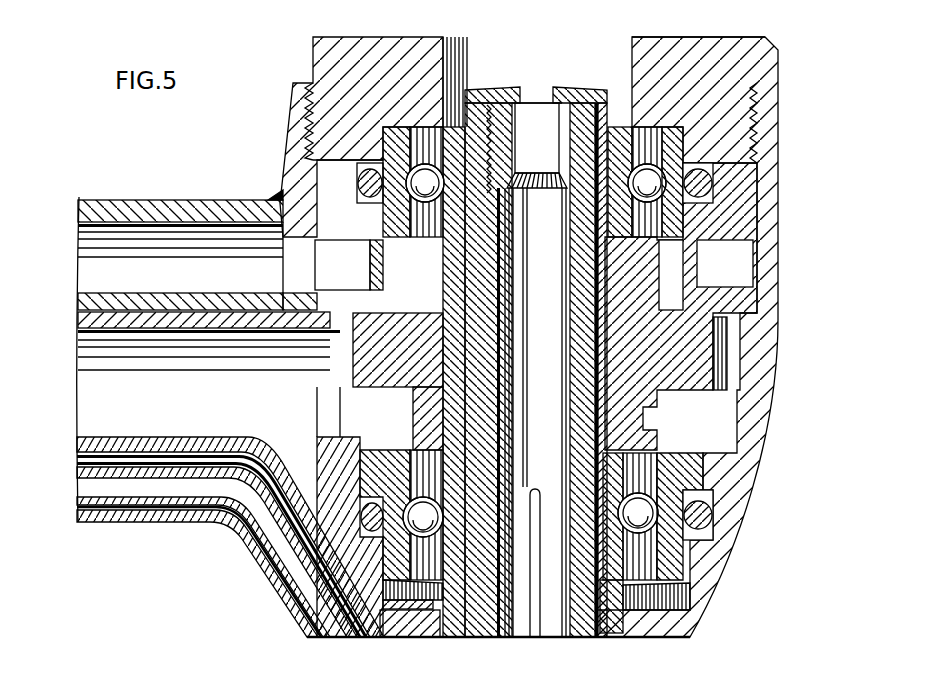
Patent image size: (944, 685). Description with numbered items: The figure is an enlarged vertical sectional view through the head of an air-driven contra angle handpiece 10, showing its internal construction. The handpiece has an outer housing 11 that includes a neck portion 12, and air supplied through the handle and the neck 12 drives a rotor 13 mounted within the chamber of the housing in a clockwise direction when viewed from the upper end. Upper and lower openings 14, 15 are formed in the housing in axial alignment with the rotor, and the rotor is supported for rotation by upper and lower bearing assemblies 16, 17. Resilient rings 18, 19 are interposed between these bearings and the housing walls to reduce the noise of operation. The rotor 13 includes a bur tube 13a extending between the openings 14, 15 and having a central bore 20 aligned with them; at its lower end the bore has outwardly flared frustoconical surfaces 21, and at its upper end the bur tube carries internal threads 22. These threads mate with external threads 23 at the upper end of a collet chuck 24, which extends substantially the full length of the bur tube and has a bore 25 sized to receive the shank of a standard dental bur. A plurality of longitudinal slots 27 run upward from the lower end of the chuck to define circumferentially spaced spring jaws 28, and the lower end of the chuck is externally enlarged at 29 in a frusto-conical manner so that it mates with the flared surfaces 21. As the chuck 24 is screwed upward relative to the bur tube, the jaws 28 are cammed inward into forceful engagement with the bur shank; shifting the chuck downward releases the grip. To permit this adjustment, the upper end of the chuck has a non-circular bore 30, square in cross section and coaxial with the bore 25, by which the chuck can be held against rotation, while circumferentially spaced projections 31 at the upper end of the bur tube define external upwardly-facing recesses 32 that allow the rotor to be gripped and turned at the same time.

The handpiece 10 is at (161, 521).
The outer housing 11 is at (782, 140).
The neck portion 12 is at (204, 200).
The rotor 13 is at (728, 350).
The bur tube 13a is at (607, 358).
The upper opening 14 is at (625, 62).
The lower opening 15 is at (614, 634).
The upper bearing assembly 16 is at (404, 127).
The lower bearing assembly 17 is at (397, 446).
The resilient ring 18 is at (362, 205).
The resilient ring 19 is at (712, 512).
The central bore 20 is at (598, 405).
The outwardly flared frustoconical surfaces 21 is at (593, 628).
The internal threads 22 is at (549, 186).
The external threads 23 is at (503, 195).
The collet chuck 24 is at (577, 377).
The bore 25 is at (567, 293).
The longitudinal slots 27 is at (533, 487).
The spring jaws 28 is at (547, 613).
The externally enlarged lower end 29 is at (447, 638).
The non-circular bore 30 is at (546, 120).
The projections 31 is at (598, 88).
The external upwardly-facing recesses 32 is at (475, 100).